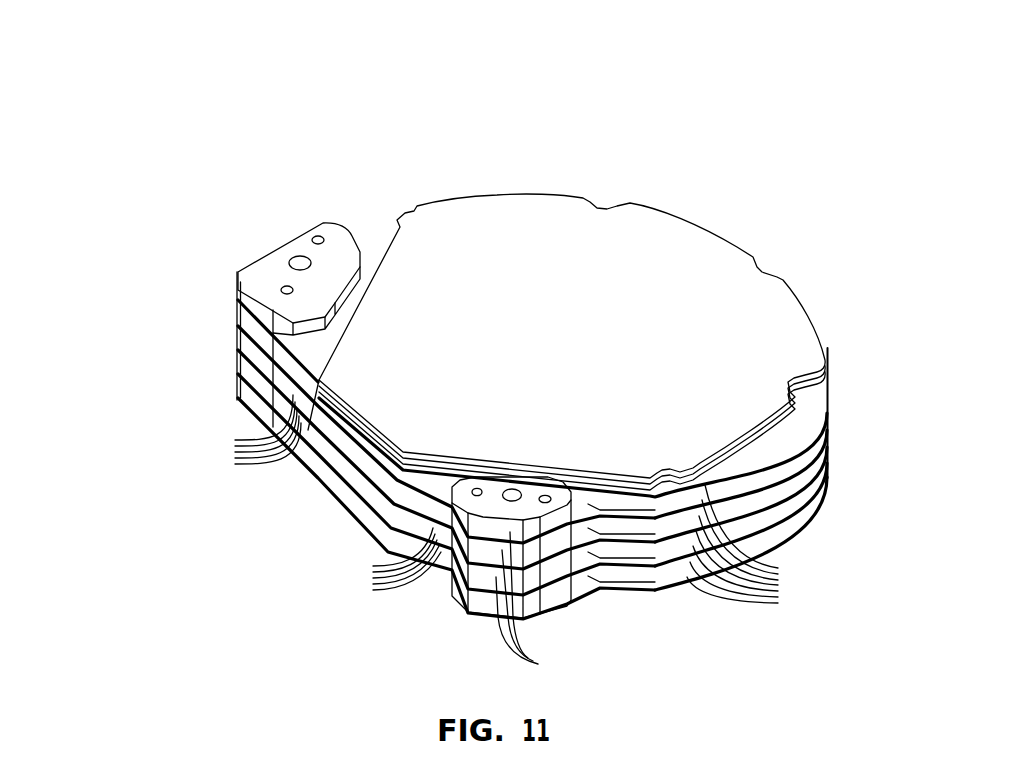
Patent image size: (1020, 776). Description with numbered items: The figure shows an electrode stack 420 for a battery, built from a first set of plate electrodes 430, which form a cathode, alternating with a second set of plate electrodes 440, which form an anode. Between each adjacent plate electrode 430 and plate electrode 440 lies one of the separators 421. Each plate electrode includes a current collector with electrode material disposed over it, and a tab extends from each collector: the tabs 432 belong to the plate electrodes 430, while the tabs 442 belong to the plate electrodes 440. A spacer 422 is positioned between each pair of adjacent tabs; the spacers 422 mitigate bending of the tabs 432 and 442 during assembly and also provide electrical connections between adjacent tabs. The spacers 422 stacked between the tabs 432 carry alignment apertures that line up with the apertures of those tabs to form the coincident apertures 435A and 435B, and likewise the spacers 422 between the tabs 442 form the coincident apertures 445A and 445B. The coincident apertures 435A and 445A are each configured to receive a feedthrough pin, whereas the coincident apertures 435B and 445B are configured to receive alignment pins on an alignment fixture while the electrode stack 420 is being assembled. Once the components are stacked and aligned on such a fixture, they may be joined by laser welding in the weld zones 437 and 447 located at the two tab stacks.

The electrode stack 420 is at (392, 100).
The separator 421 is at (757, 544).
The spacer 422 is at (248, 392).
The first set of plate electrodes 430 is at (244, 431).
The tab 432 is at (367, 243).
The coincident aperture 435A is at (297, 250).
The coincident aperture 435B is at (316, 228).
The weld zone 437 is at (162, 288).
The second set of plate electrodes 440 is at (385, 561).
The tab 442 is at (590, 512).
The coincident aperture 445A is at (511, 480).
The coincident aperture 445B is at (478, 476).
The weld zone 447 is at (480, 567).